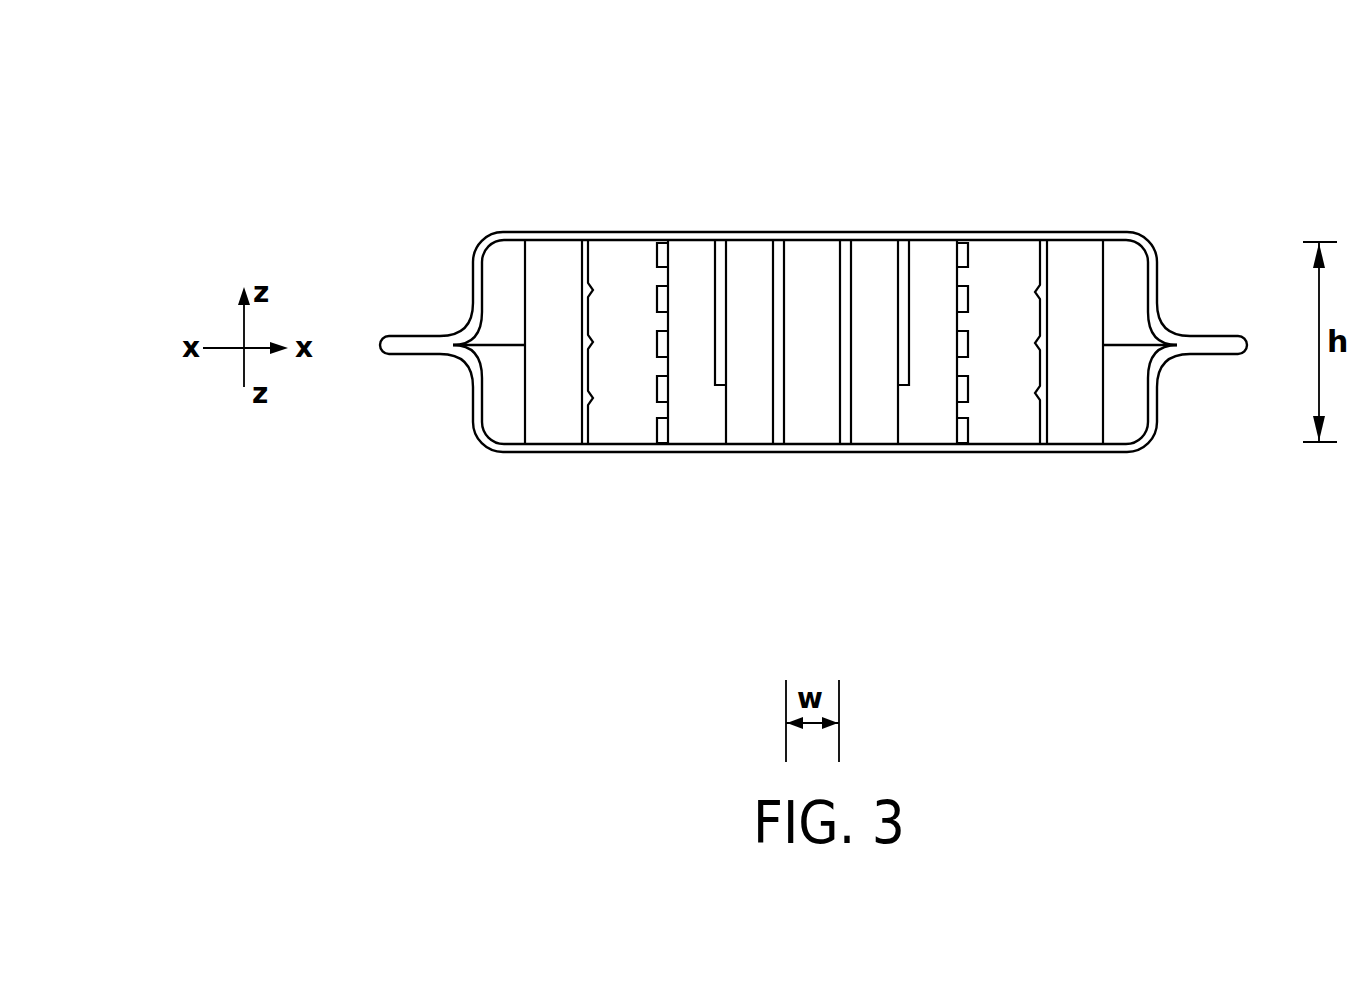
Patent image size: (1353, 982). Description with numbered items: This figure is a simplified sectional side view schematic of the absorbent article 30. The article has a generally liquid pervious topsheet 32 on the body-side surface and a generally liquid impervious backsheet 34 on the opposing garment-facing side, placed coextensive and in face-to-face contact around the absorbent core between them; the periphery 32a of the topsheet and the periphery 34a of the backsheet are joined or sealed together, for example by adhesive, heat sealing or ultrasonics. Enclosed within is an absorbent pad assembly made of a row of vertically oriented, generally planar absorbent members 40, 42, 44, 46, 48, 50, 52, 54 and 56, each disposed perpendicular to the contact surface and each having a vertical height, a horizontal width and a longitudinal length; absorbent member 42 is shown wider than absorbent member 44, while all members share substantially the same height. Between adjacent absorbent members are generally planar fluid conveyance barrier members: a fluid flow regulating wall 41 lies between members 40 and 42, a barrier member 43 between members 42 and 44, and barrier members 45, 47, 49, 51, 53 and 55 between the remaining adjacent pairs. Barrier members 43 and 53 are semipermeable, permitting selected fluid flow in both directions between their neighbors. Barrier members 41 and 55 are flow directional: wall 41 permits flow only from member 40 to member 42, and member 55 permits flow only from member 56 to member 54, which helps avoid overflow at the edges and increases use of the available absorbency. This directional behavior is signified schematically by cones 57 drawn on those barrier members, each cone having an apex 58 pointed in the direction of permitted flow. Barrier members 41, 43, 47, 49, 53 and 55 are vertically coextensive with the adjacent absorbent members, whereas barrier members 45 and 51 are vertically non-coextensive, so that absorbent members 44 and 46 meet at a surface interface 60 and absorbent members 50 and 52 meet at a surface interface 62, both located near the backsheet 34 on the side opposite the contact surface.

The absorbent article 30 is at (1069, 134).
The topsheet 32 is at (473, 250).
The backsheet 34 is at (472, 410).
The periphery of the topsheet 32a is at (1207, 333).
The periphery of the backsheet 34a is at (1200, 353).
The absorbent member 40 is at (553, 430).
The fluid flow regulating wall 41 is at (583, 240).
The absorbent member 42 is at (619, 423).
The fluid conveyance barrier member 43 is at (664, 240).
The absorbent member 44 is at (702, 423).
The fluid conveyance barrier member 45 is at (720, 240).
The absorbent member 46 is at (757, 423).
The fluid conveyance barrier member 47 is at (778, 240).
The absorbent member 48 is at (815, 423).
The fluid conveyance barrier member 49 is at (843, 240).
The absorbent member 50 is at (877, 423).
The fluid conveyance barrier member 51 is at (901, 240).
The absorbent member 52 is at (935, 423).
The fluid conveyance barrier member 53 is at (960, 240).
The absorbent member 54 is at (1008, 423).
The fluid conveyance barrier member 55 is at (1040, 240).
The absorbent member 56 is at (1070, 423).
The cone 57 is at (592, 403).
The apex 58 is at (590, 400).
The surface interface 60 is at (723, 425).
The surface interface 62 is at (906, 425).